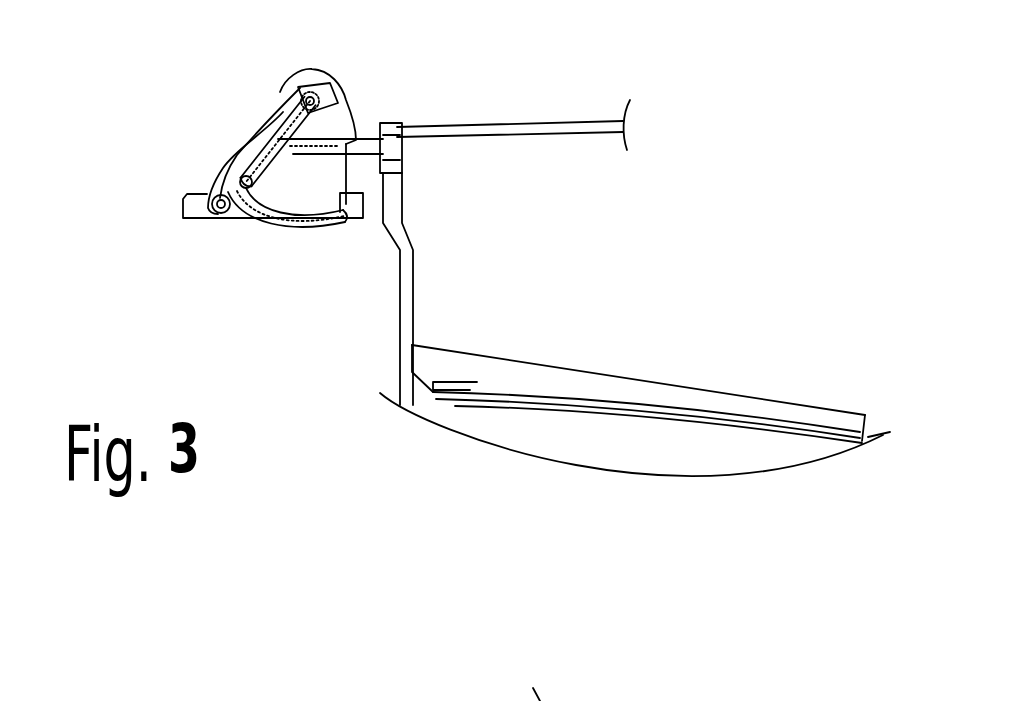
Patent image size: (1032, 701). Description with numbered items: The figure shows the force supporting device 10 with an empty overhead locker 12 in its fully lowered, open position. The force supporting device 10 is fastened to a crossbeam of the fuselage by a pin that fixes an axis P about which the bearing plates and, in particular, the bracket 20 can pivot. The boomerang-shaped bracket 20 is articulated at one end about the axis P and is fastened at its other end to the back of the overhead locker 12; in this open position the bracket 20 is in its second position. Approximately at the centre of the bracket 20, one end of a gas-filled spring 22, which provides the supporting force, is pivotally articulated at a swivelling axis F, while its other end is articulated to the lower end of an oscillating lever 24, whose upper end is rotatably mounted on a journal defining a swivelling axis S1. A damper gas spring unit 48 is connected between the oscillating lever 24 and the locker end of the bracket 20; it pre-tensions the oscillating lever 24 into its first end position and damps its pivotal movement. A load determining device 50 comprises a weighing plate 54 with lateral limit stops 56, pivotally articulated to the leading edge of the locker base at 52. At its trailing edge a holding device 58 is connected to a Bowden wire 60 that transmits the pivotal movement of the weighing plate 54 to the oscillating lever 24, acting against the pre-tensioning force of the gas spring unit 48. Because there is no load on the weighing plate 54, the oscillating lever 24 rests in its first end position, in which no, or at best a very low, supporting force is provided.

The force supporting device 10 is at (197, 93).
The bracket 20 is at (247, 122).
The gas-filled spring 22 is at (273, 143).
The oscillating lever 24 is at (257, 148).
The axis P is at (223, 212).
The swivelling axis F is at (318, 103).
The swivelling axis S1 is at (400, 65).
The damper gas spring unit 48 is at (348, 150).
The Bowden wire 60 is at (398, 187).
The overhead locker 12 is at (510, 132).
The load determining device 50 is at (642, 254).
The swivelling axis 52 is at (867, 433).
The weighing plate 54 is at (680, 415).
The lateral limit stops 56 is at (532, 375).
The holding device 58 is at (427, 378).